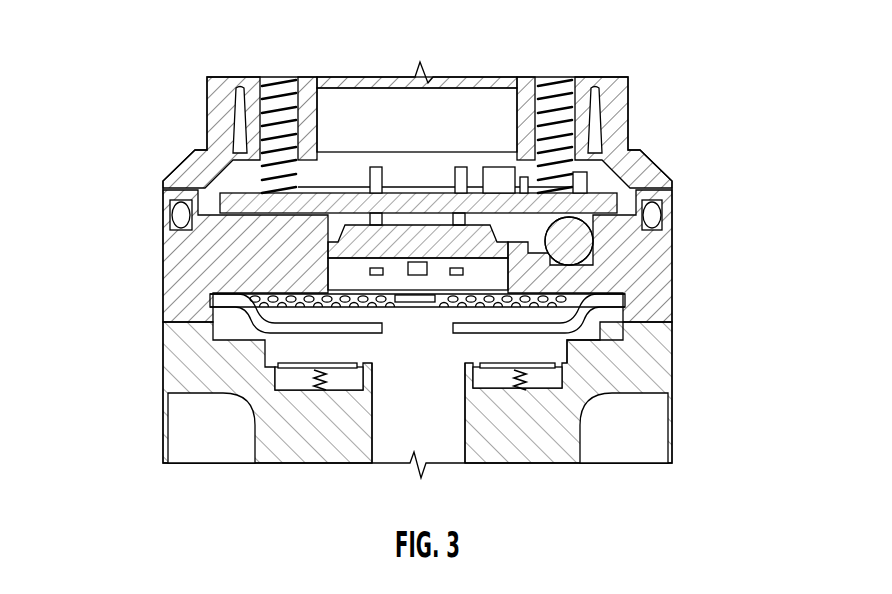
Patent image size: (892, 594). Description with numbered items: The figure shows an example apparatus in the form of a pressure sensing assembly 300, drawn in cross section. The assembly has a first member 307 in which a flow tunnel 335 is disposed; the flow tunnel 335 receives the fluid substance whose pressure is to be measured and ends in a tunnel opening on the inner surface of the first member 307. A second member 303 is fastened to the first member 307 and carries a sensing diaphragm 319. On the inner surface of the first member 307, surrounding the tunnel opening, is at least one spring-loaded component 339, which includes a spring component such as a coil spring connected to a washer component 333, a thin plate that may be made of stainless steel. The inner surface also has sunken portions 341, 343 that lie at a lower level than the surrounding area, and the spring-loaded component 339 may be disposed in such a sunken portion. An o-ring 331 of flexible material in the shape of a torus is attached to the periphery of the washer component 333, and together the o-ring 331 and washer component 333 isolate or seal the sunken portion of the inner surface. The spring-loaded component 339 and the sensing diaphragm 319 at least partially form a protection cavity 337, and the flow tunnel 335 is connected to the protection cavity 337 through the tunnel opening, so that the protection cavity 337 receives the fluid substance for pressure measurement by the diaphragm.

The pressure sensing assembly 300 is at (177, 121).
The second member 303 is at (273, 268).
The first member 307 is at (178, 377).
The sensing diaphragm 319 is at (333, 300).
The o-ring 331 is at (358, 373).
The washer component 333 is at (500, 366).
The flow tunnel 335 is at (427, 442).
The protection cavity 337 is at (547, 347).
The spring-loaded component 339 is at (528, 388).
The sunken portion 341 is at (280, 393).
The sunken portion 343 is at (583, 393).